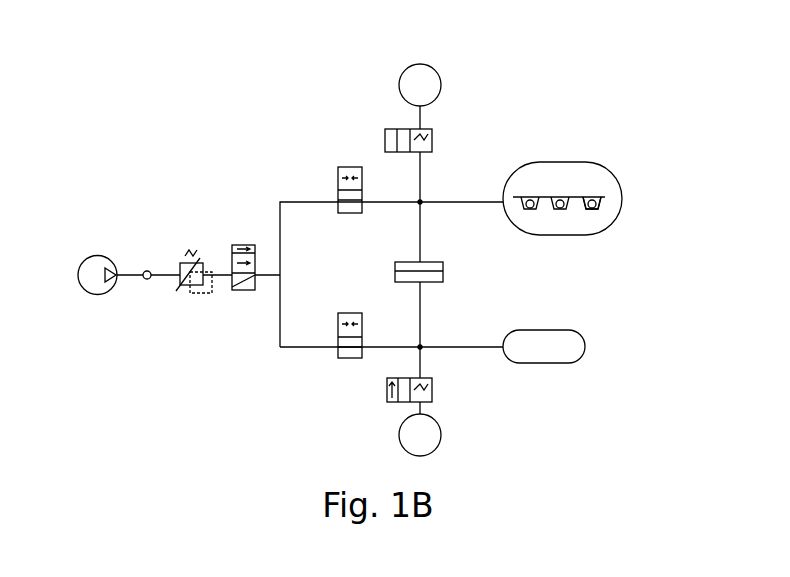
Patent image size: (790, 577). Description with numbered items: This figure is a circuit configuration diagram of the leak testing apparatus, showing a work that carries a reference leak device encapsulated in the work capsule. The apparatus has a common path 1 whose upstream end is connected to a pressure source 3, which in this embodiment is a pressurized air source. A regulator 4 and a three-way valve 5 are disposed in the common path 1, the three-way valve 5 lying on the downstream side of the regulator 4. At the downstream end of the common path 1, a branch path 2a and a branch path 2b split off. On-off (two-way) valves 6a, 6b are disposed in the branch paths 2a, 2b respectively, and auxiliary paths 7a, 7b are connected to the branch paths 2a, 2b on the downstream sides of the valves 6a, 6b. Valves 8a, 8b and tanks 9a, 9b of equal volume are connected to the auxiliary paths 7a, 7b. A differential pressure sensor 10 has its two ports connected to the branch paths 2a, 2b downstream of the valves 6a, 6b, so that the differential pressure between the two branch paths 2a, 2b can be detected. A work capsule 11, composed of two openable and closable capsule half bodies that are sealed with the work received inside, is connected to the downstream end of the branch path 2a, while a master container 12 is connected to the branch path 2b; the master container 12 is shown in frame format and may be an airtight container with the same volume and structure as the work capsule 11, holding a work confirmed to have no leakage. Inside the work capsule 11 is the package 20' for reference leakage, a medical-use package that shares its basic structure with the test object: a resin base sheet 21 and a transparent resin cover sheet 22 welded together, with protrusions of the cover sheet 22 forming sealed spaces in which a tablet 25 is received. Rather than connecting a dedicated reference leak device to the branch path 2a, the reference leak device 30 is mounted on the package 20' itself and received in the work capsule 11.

The common path 1 is at (156, 269).
The branch path 2a is at (285, 199).
The branch path 2b is at (293, 351).
The pressure source 3 is at (88, 258).
The regulator 4 is at (185, 290).
The three-way valve 5 is at (243, 292).
The valve 6a is at (336, 185).
The valve 6b is at (336, 322).
The auxiliary path 7a is at (422, 182).
The auxiliary path 7b is at (422, 358).
The valve 8a is at (432, 140).
The valve 8b is at (433, 392).
The tank 9a is at (437, 78).
The tank 9b is at (437, 443).
The differential pressure sensor 10 is at (445, 281).
The work capsule 11 is at (580, 163).
The master container 12 is at (585, 358).
The package for reference leakage 20' is at (634, 169).
The base sheet 21 is at (523, 193).
The cover sheet 22 is at (590, 212).
The tablet 25 is at (560, 212).
The reference leak device 30 is at (555, 196).